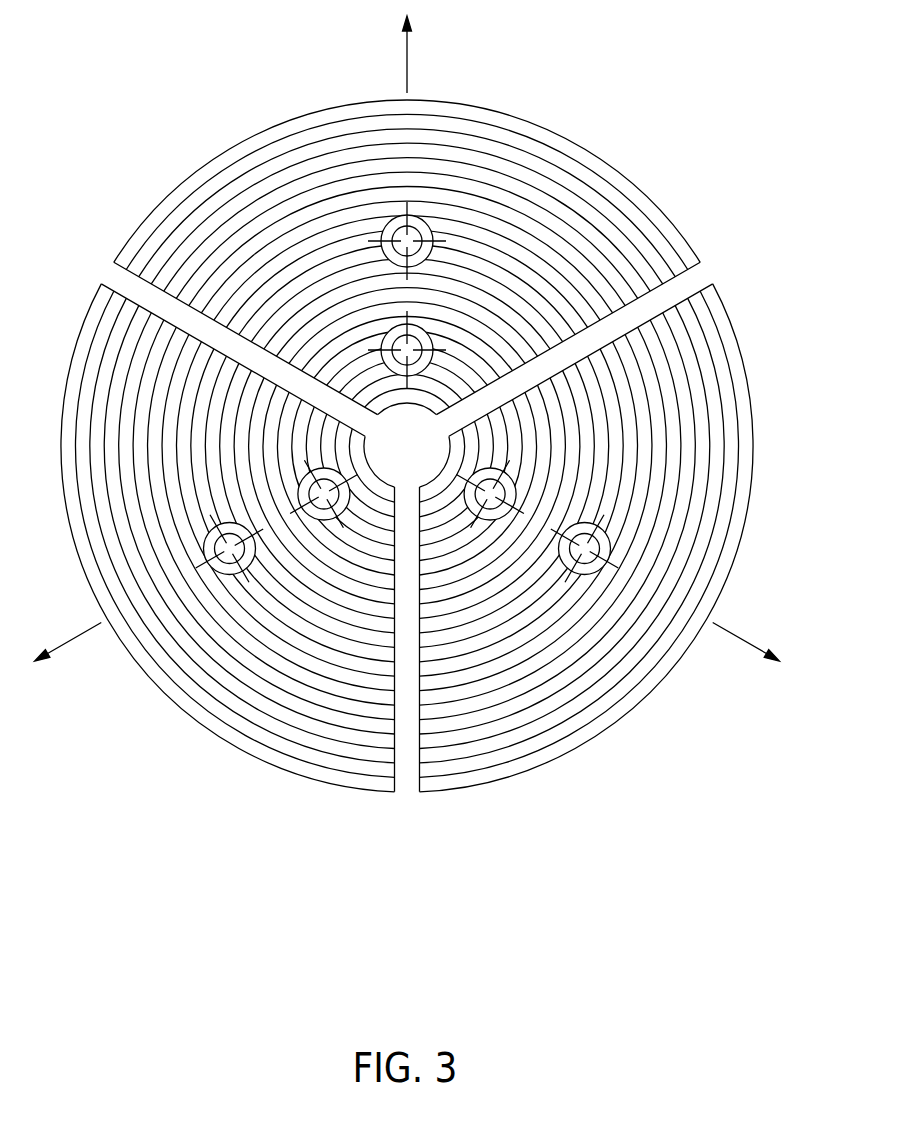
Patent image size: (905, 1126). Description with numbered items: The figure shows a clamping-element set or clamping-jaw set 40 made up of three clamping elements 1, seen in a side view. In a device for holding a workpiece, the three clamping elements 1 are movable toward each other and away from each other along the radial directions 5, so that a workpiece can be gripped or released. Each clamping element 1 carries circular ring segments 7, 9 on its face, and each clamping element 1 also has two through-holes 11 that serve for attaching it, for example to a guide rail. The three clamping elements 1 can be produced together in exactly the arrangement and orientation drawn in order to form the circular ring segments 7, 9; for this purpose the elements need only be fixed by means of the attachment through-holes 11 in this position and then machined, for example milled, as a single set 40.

The clamping element 1 is at (444, 447).
The radial directions 5 is at (408, 56).
The circular ring segment 7 is at (473, 587).
The circular ring segment 9 is at (718, 473).
The through-holes 11 is at (506, 517).
The clamping-element set 40 is at (444, 423).